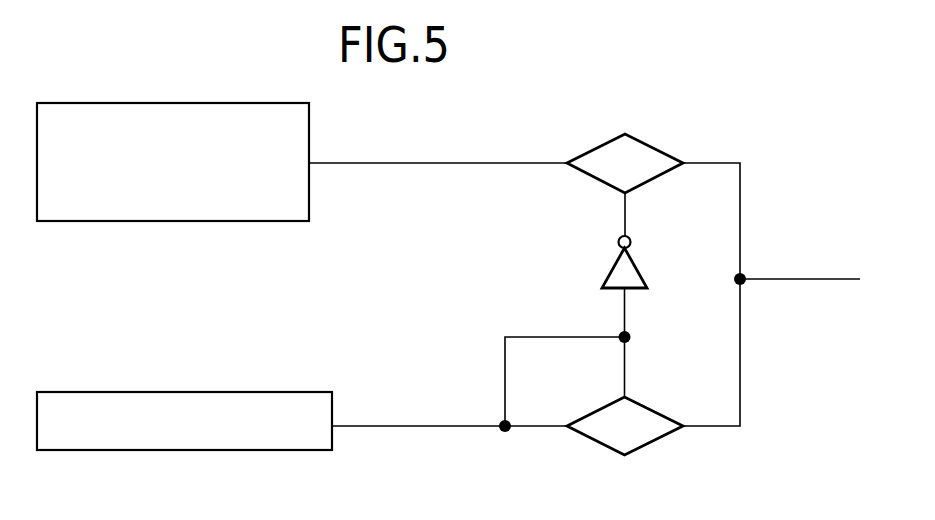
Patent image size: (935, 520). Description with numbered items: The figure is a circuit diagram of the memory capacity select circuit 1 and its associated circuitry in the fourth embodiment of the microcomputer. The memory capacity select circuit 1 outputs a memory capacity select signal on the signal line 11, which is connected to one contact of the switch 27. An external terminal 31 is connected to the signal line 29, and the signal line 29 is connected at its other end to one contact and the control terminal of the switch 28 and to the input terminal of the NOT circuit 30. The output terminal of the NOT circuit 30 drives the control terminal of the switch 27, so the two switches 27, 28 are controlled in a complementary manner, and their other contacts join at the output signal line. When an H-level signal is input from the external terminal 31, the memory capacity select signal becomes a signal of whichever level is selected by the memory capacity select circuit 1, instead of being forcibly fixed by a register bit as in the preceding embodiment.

The memory capacity select circuit 1 is at (203, 103).
The signal line 11 is at (461, 163).
The switch 27 is at (649, 146).
The switch 28 is at (661, 414).
The signal line 29 is at (430, 427).
The NOT circuit 30 is at (607, 278).
The external terminal 31 is at (258, 392).